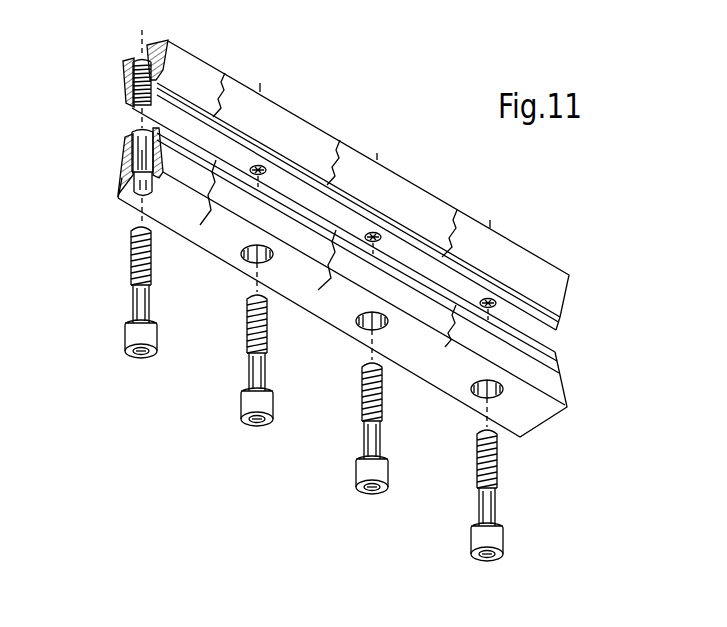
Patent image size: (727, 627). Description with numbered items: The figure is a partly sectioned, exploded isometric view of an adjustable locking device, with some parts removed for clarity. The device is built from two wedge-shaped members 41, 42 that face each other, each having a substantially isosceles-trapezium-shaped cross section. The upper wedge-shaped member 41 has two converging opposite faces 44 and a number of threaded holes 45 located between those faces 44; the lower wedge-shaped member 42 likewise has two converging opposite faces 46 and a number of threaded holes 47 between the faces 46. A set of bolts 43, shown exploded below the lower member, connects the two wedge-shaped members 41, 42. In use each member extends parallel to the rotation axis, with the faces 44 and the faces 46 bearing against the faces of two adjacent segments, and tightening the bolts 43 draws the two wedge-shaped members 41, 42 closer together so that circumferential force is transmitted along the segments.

The wedge-shaped member 41 is at (192, 85).
The wedge-shaped member 42 is at (535, 415).
The bolts 43 is at (139, 311).
The converging opposite faces 44 is at (120, 90).
The threaded holes 45 is at (134, 58).
The converging opposite faces 46 is at (114, 178).
The threaded holes 47 is at (132, 197).